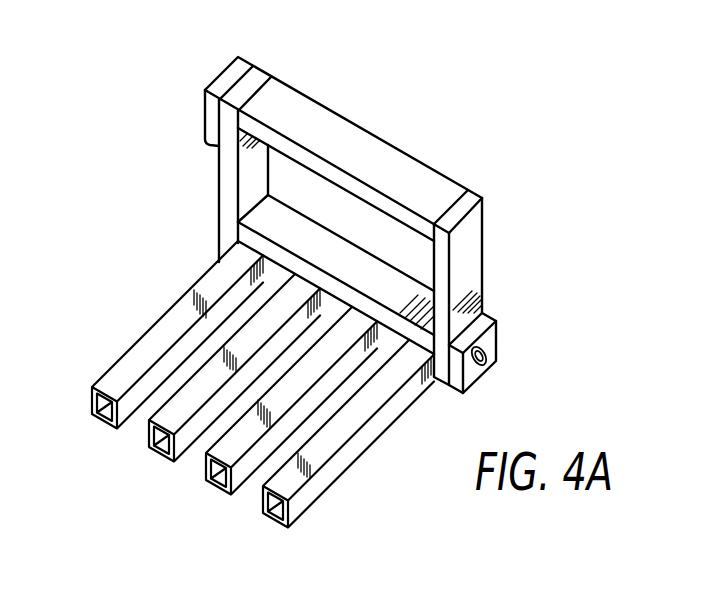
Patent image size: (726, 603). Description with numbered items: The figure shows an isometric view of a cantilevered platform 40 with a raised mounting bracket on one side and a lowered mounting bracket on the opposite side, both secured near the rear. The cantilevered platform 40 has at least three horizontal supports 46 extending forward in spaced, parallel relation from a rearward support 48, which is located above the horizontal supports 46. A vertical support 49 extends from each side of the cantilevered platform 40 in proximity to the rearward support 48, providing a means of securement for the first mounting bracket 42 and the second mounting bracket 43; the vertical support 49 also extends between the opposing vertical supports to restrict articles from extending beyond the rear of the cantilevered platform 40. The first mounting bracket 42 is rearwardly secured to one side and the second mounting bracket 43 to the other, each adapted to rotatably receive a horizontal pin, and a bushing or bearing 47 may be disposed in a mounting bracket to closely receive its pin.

The cantilevered platform 40 is at (335, 292).
The first mounting bracket 42 is at (205, 114).
The second mounting bracket 43 is at (486, 316).
The horizontal supports 46 is at (283, 485).
The bushing or bearing 47 is at (485, 357).
The rearward support 48 is at (393, 272).
The vertical support 49 is at (222, 203).